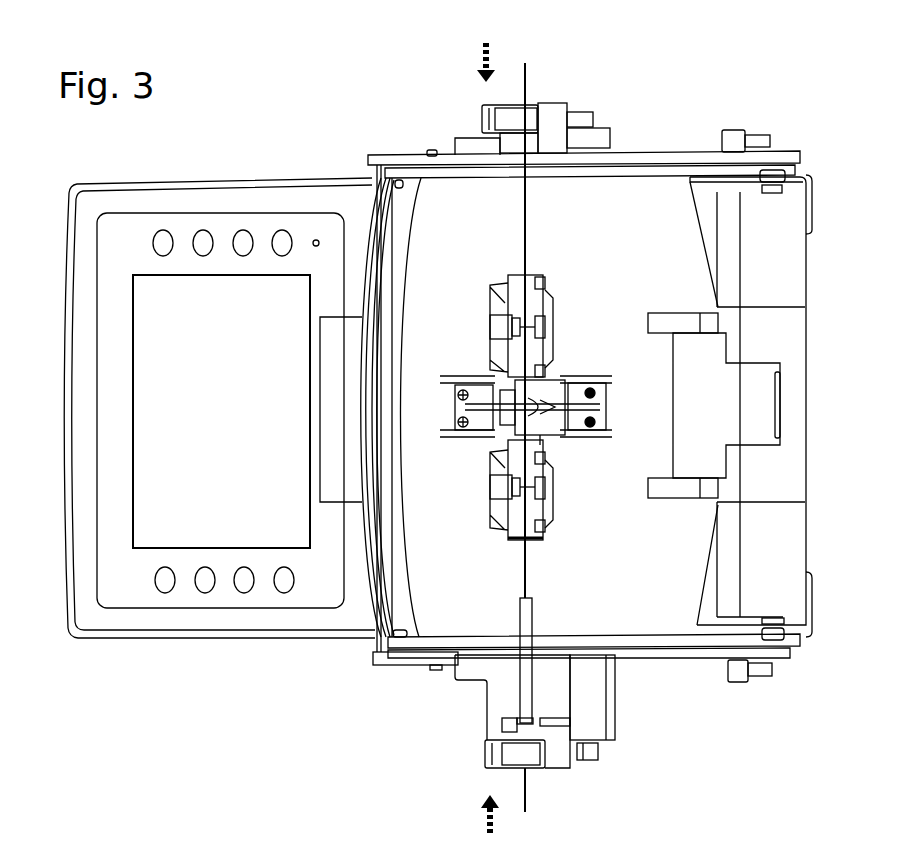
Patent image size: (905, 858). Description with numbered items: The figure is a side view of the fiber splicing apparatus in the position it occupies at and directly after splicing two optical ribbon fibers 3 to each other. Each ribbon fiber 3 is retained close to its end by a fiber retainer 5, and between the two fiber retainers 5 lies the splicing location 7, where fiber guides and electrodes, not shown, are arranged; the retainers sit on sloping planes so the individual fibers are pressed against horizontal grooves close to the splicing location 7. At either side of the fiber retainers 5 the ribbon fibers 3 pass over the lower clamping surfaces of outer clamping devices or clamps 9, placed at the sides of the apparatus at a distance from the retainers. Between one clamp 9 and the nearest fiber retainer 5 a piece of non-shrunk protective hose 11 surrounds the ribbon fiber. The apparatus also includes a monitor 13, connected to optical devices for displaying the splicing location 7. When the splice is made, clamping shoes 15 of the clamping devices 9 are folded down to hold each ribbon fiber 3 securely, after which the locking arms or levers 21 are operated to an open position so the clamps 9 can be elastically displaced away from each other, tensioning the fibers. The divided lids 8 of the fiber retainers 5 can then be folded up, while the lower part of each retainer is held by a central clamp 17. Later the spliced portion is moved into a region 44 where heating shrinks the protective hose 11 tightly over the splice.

The optical ribbon fiber 3 is at (528, 62).
The fiber retainer 5 is at (523, 312).
The splicing location 7 is at (479, 363).
The divided lid 8 is at (550, 300).
The outer clamping device 9 is at (541, 89).
The protective hose 11 is at (520, 612).
The monitor 13 is at (148, 278).
The clamping shoe 15 is at (522, 764).
The central clamp 17 is at (500, 490).
The locking arm 21 is at (599, 756).
The heating region 44 is at (663, 417).